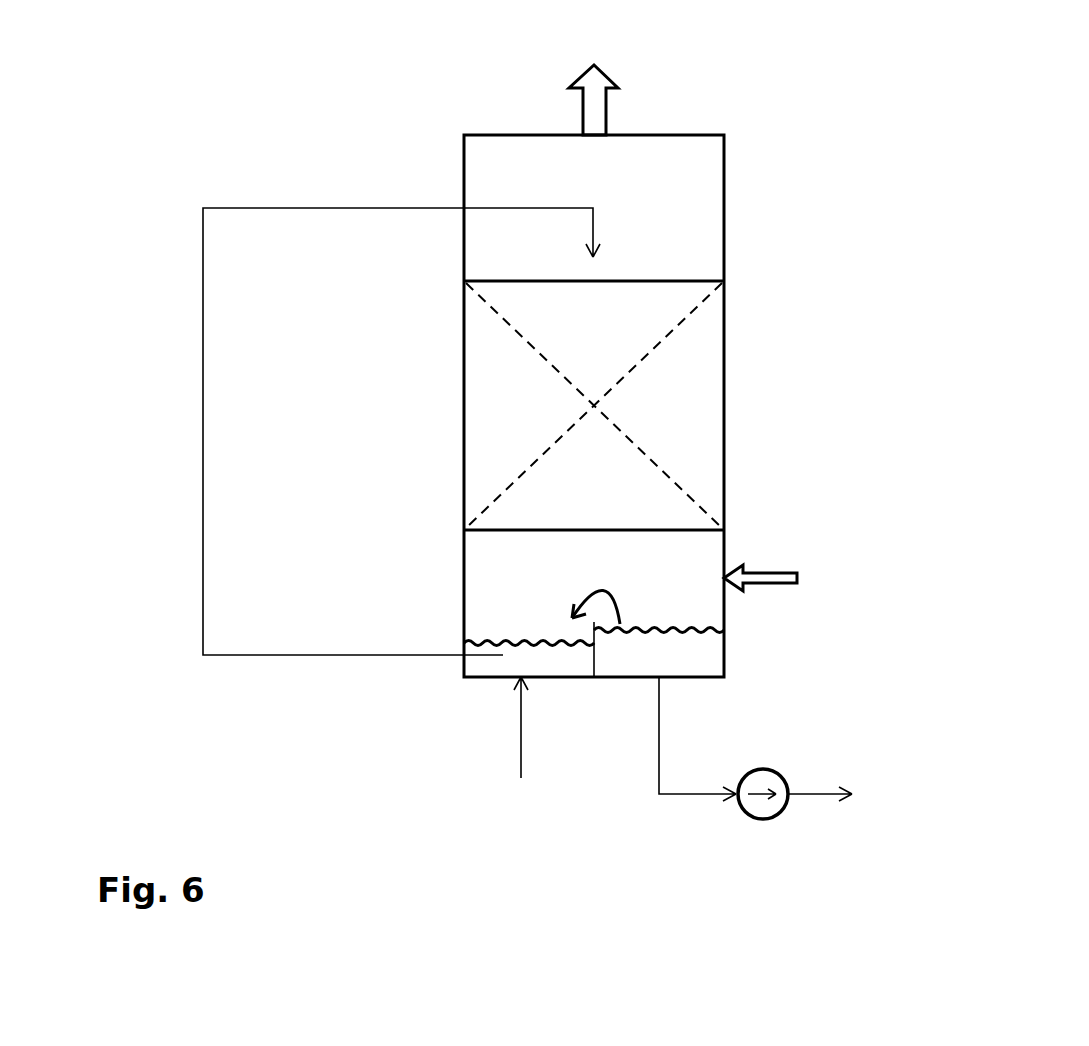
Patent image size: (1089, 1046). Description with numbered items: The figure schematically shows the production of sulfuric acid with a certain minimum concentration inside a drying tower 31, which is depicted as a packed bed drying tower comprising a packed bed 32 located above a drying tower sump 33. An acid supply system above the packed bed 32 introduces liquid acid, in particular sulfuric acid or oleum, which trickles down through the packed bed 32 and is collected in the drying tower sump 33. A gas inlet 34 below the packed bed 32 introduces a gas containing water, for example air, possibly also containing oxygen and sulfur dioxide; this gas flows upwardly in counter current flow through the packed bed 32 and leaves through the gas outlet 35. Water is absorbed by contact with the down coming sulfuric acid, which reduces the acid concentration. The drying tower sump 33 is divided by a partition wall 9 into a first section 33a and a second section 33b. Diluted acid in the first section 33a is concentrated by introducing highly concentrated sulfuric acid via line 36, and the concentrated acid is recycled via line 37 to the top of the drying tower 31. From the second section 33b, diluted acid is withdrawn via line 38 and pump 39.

The partition wall 9 is at (593, 640).
The drying tower 31 is at (724, 263).
The packed bed 32 is at (594, 405).
The drying tower sump 33 is at (477, 605).
The first section 33a is at (488, 670).
The second section 33b is at (715, 655).
The gas inlet 34 is at (770, 590).
The gas outlet 35 is at (606, 107).
The line 36 is at (521, 737).
The line 37 is at (203, 437).
The line 38 is at (659, 742).
The pump 39 is at (761, 768).